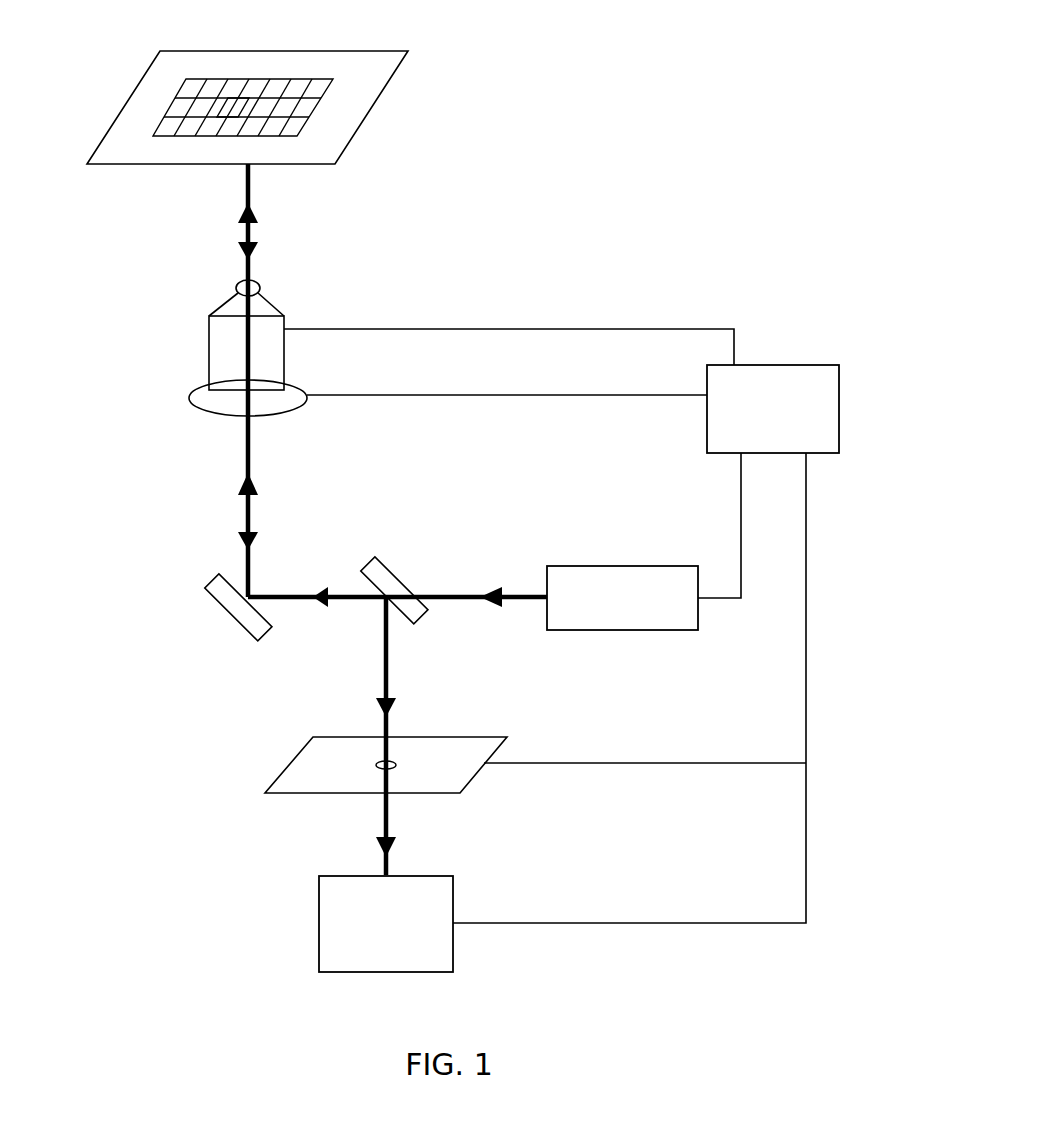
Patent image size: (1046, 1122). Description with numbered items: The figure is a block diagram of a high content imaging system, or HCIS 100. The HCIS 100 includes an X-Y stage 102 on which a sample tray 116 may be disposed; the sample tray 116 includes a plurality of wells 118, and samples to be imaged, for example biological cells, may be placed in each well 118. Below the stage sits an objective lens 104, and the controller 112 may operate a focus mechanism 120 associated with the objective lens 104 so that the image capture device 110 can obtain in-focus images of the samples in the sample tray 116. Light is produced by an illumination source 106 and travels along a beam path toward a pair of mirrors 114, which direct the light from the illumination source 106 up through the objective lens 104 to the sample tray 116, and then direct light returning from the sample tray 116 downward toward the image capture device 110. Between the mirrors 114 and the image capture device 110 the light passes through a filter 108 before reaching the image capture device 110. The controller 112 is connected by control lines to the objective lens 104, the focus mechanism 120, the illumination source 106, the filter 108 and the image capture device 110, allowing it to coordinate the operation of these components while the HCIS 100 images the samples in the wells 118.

The HCIS 100 is at (710, 118).
The X-Y stage 102 is at (368, 112).
The objective lens 104 is at (227, 330).
The illumination source 106 is at (595, 567).
The filter 108 is at (453, 737).
The image capture device 110 is at (318, 917).
The controller 112 is at (842, 388).
The mirror 114 is at (237, 607).
The sample tray 116 is at (298, 135).
The well 118 is at (198, 98).
The focus mechanism 120 is at (200, 392).